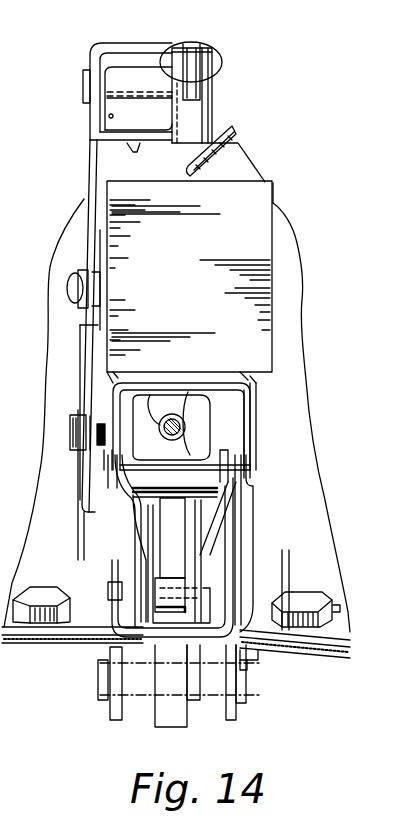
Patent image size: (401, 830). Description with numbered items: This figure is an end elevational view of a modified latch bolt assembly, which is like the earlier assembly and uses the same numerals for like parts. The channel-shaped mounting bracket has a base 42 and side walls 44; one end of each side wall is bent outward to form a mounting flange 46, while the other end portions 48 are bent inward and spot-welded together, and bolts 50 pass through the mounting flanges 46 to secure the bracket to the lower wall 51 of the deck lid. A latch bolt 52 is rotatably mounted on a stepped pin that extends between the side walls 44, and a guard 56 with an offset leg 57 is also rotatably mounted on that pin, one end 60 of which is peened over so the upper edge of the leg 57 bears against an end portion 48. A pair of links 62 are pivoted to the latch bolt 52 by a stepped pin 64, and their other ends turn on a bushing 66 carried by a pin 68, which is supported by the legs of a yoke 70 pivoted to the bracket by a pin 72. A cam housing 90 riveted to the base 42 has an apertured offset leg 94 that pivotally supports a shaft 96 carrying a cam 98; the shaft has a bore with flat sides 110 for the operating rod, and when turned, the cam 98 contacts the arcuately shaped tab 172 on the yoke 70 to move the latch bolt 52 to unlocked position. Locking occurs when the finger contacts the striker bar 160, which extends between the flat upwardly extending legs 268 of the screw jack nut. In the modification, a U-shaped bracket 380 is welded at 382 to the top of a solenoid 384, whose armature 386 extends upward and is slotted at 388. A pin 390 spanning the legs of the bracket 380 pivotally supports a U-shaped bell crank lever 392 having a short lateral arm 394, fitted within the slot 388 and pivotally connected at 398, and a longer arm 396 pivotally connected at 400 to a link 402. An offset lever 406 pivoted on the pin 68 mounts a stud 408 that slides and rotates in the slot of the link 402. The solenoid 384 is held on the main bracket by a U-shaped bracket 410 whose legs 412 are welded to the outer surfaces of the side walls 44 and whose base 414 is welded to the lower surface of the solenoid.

The base 42 is at (228, 435).
The side walls 44 is at (118, 552).
The mounting flange 46 is at (12, 647).
The end portions 48 is at (100, 644).
The bolts 50 is at (37, 617).
The lower wall 51 is at (290, 651).
The latch bolt 52 is at (215, 545).
The guard 56 is at (244, 655).
The offset leg 57 is at (185, 715).
The end of pin 60 is at (242, 562).
The links 62 is at (197, 509).
The stepped pin 64 is at (117, 530).
The bushing 66 is at (183, 598).
The pin 68 is at (108, 582).
The yoke 70 is at (128, 468).
The pin 72 is at (130, 495).
The cam housing 90 is at (194, 392).
The apertured offset leg 94 is at (190, 410).
The shaft 96 is at (169, 420).
The cam 98 is at (133, 378).
The flat sides 110 is at (184, 423).
The striker bar 160 is at (212, 690).
The arcuately shaped tab 172 is at (218, 458).
The flat upwardly extending legs 268 is at (238, 712).
The U-shaped bracket 380 is at (110, 118).
The weld 382 is at (134, 148).
The solenoid 384 is at (260, 193).
The solenoid armature 386 is at (201, 116).
The slot 388 is at (194, 43).
The pin 390 is at (117, 83).
The U-shaped bell crank lever 392 is at (108, 36).
The arm 394 is at (213, 56).
The arm 396 is at (90, 233).
The pivotal connection 398 is at (210, 68).
The pivotal connection 400 is at (100, 286).
The link 402 is at (82, 334).
The offset lever 406 is at (88, 512).
The stud 408 is at (72, 424).
The U-shaped bracket 410 is at (243, 411).
The legs 412 is at (100, 387).
The base 414 is at (177, 386).